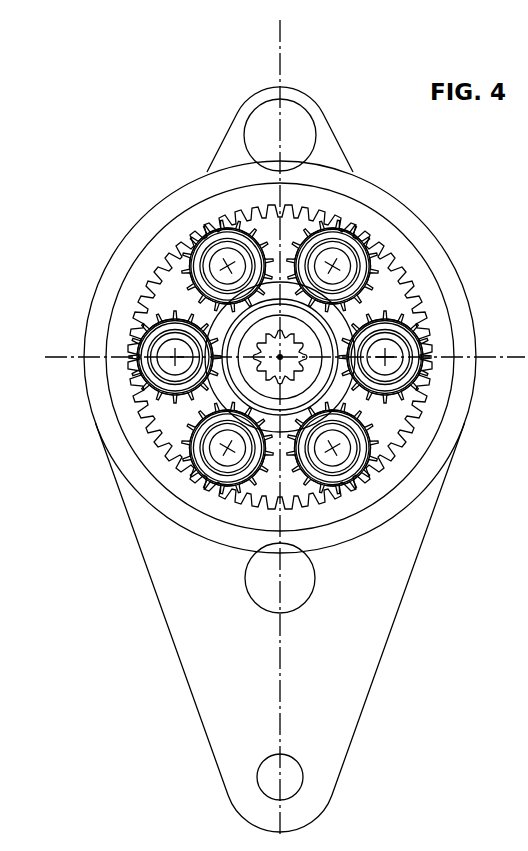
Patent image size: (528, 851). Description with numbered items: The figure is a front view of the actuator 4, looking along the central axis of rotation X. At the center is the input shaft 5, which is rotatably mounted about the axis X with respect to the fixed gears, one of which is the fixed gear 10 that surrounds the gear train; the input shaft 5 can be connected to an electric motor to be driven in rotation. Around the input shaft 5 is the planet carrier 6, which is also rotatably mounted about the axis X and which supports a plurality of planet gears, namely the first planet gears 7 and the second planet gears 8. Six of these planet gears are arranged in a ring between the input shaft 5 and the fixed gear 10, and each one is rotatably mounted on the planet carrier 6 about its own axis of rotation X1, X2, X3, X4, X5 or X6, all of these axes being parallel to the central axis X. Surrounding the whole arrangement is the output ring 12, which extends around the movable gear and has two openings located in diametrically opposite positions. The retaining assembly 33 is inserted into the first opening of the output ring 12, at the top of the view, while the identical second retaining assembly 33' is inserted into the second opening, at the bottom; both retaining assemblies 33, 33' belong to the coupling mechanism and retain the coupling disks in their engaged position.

The actuator 4 is at (457, 178).
The input shaft 5 is at (258, 388).
The planet carrier 6 is at (388, 322).
The first planet gears 7 is at (152, 333).
The second planet gears 8 is at (192, 257).
The fixed gear 10 is at (388, 240).
The output ring 12 is at (308, 105).
The retaining assembly 33 is at (275, 103).
The second retaining assembly 33' is at (204, 700).
The axis of rotation X is at (281, 359).
The axis of rotation X1 is at (226, 450).
The axis of rotation X2 is at (334, 450).
The axis of rotation X3 is at (387, 356).
The axis of rotation X4 is at (334, 264).
The axis of rotation X5 is at (226, 264).
The axis of rotation X6 is at (173, 357).